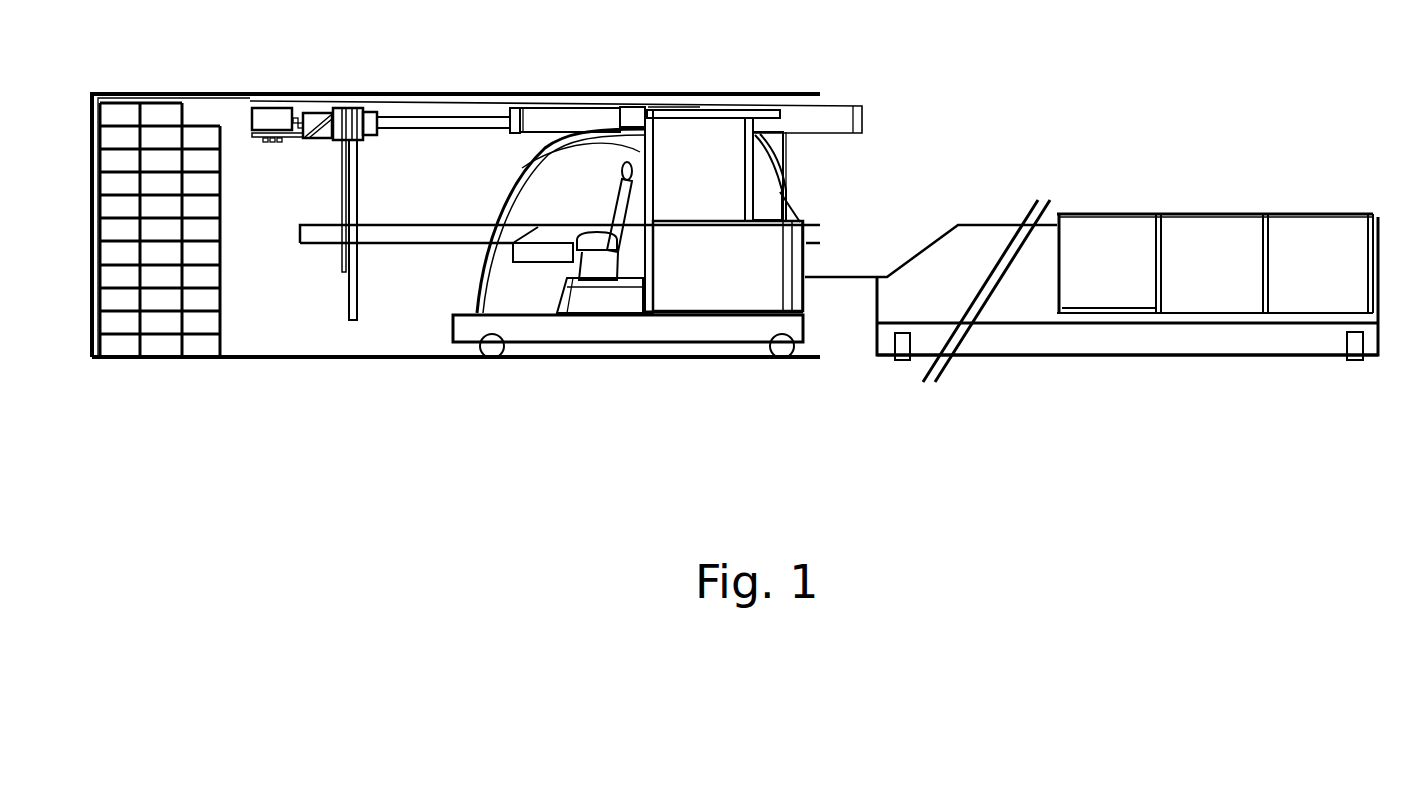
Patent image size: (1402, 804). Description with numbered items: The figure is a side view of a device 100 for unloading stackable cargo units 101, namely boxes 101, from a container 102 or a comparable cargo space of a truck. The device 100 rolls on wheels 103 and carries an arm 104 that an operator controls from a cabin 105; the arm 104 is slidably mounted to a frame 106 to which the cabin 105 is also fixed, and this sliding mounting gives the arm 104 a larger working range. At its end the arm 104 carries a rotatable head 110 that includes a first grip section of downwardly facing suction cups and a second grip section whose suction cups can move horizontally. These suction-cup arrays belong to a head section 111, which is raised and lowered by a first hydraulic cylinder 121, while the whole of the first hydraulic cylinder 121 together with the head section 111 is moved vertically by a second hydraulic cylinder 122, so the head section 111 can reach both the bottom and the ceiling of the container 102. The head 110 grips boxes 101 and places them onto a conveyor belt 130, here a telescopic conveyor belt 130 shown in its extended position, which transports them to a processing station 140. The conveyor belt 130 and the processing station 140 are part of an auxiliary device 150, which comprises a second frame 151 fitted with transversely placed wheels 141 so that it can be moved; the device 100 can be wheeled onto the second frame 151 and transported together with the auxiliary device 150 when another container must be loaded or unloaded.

The device 100 is at (838, 172).
The stackable cargo units 101 is at (160, 108).
The container 102 is at (620, 106).
The wheels 103 is at (493, 357).
The arm 104 is at (420, 118).
The cabin 105 is at (477, 293).
The frame 106 is at (743, 153).
The rotatable head 110 is at (339, 94).
The head section 111 is at (267, 120).
The first hydraulic cylinder 121 is at (355, 310).
The second hydraulic cylinder 122 is at (343, 265).
The conveyor belt 130 is at (460, 233).
The processing station 140 is at (1117, 253).
The transversely placed wheels 141 is at (900, 343).
The auxiliary device 150 is at (1221, 370).
The second frame 151 is at (1113, 353).